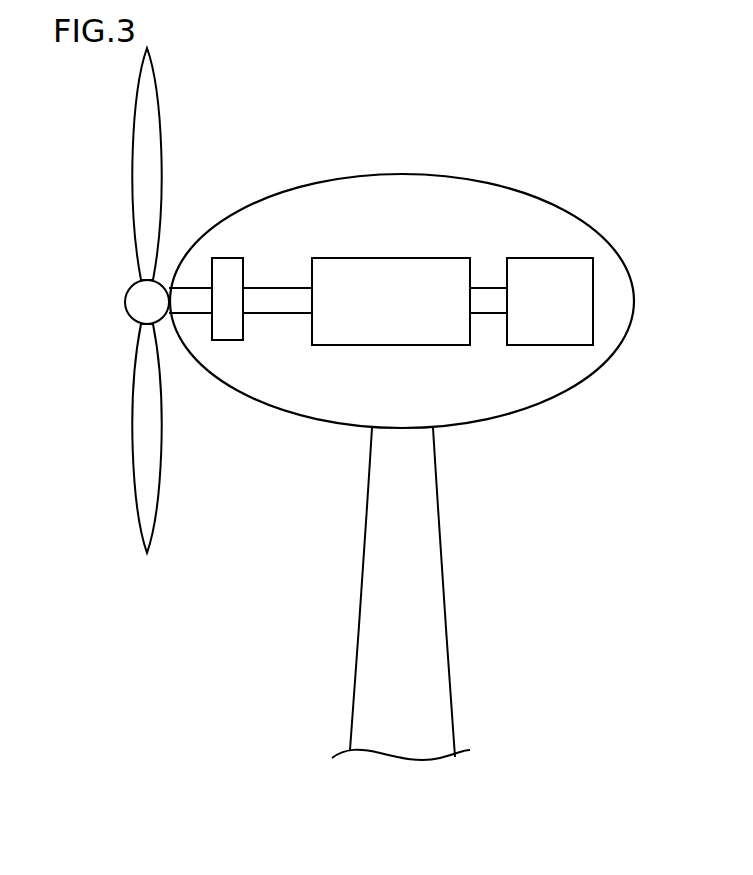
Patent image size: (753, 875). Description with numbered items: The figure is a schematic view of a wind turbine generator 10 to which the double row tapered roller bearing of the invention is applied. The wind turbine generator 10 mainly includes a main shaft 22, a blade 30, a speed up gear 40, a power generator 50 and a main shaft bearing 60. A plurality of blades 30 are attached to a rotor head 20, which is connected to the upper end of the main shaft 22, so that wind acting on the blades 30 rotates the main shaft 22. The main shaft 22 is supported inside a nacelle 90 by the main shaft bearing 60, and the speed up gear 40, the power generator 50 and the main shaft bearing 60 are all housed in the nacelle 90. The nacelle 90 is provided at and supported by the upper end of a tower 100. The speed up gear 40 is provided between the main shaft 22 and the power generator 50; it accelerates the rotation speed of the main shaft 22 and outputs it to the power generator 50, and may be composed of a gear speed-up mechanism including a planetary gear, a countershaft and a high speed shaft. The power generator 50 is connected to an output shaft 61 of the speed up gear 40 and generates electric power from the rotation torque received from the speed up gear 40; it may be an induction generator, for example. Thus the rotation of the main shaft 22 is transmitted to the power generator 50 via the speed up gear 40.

The wind turbine generator 10 is at (593, 107).
The rotor head 20 is at (135, 302).
The main shaft 22 is at (195, 316).
The blade 30 is at (147, 96).
The speed up gear 40 is at (337, 280).
The power generator 50 is at (552, 280).
The main shaft bearing 60 is at (228, 278).
The output shaft 61 is at (485, 300).
The nacelle 90 is at (617, 254).
The tower 100 is at (423, 614).